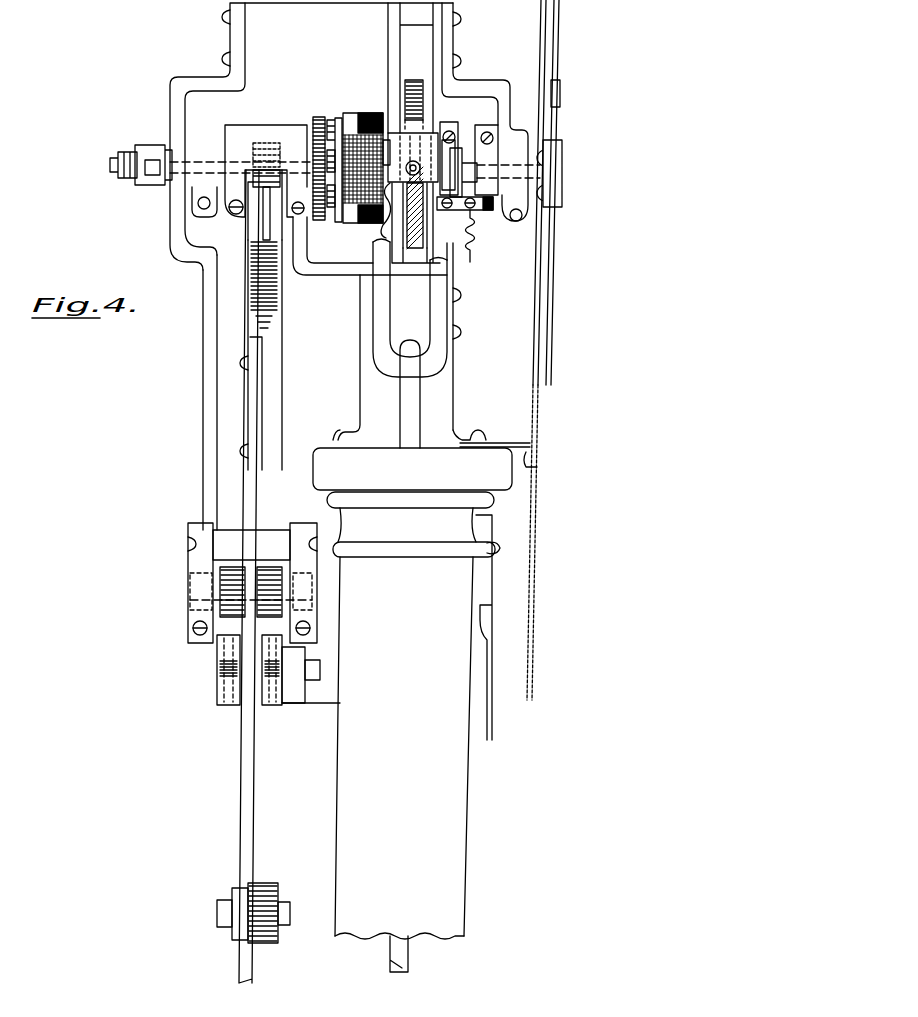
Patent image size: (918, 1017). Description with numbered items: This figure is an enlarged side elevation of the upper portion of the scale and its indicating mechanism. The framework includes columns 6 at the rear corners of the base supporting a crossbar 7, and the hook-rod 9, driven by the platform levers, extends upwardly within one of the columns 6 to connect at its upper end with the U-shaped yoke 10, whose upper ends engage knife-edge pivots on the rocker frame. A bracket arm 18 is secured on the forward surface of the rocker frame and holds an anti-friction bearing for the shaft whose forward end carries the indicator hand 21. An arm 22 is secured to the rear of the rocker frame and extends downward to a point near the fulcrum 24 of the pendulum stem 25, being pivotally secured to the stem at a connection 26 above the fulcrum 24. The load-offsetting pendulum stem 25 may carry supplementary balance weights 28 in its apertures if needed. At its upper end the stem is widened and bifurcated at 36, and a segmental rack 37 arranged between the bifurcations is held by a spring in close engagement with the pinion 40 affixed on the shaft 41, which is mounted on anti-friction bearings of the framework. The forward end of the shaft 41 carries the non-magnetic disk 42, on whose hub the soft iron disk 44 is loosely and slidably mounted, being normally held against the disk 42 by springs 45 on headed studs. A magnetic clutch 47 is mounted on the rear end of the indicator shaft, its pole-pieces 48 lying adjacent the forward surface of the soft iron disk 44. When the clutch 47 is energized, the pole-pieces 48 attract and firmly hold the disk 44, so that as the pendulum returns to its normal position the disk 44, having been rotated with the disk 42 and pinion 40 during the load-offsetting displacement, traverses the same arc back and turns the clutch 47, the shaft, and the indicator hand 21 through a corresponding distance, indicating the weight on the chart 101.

The column 6 is at (417, 743).
The crossbar 7 is at (412, 502).
The hook-rod 9 is at (418, 410).
The U-shaped yoke 10 is at (386, 320).
The bracket arm 18 is at (483, 80).
The indicator hand 21 is at (559, 52).
The arm 22 is at (204, 342).
The fulcrum 24 is at (232, 678).
The pendulum stem 25 is at (247, 773).
The pivotal connection 26 is at (232, 592).
The supplementary balance weight 28 is at (263, 945).
The bifurcated upper end 36 is at (264, 236).
The segmental rack 37 is at (262, 217).
The pinion 40 is at (263, 178).
The shaft 41 is at (220, 163).
The disk 42 is at (313, 118).
The soft iron disk 44 is at (329, 125).
The spring 45 is at (337, 128).
The magnetic clutch 47 is at (342, 218).
The pole-piece 48 is at (329, 210).
The chart 101 is at (534, 648).